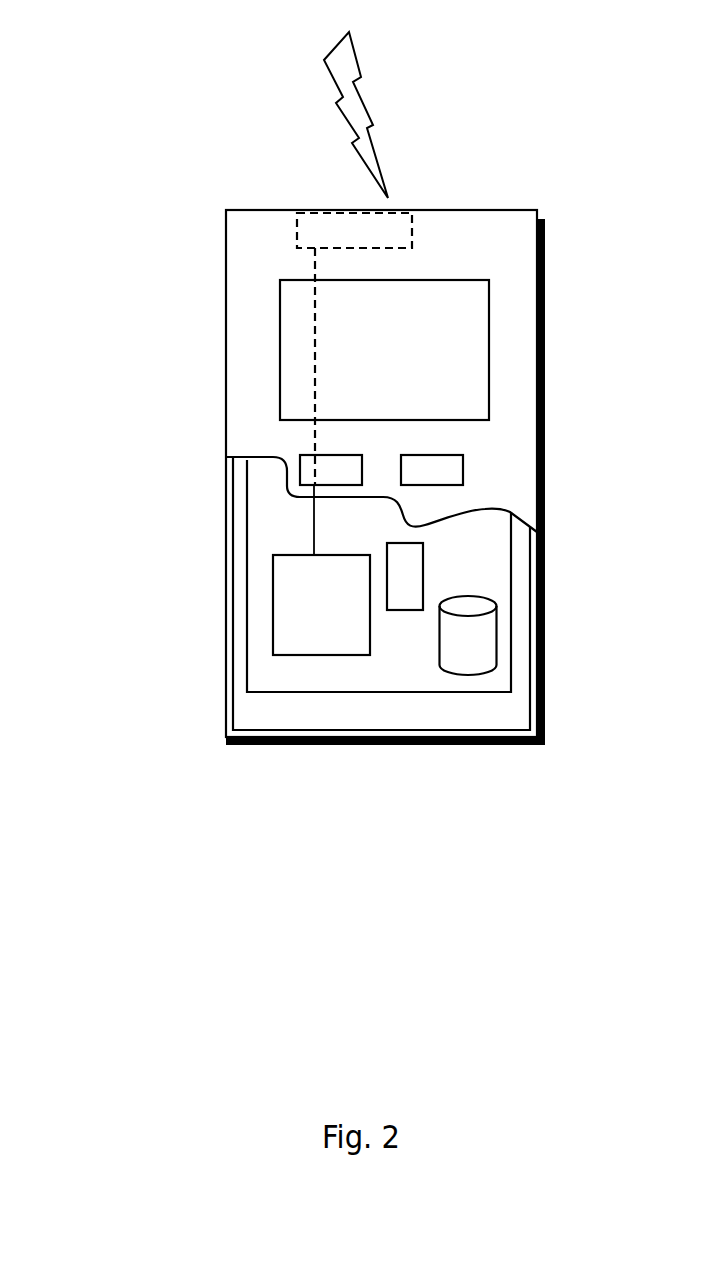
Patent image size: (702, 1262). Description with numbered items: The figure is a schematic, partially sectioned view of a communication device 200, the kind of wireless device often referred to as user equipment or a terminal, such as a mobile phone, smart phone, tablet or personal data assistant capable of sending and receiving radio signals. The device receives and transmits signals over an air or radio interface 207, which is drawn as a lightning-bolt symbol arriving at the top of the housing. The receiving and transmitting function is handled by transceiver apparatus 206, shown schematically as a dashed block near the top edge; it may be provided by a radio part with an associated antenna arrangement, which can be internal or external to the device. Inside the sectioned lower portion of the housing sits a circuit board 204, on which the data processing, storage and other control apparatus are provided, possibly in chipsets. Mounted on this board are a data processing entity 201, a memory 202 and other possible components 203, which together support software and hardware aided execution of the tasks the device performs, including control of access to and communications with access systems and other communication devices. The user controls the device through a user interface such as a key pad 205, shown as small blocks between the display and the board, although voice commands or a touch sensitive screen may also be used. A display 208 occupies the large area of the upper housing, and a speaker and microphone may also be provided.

The communication device 200 is at (226, 253).
The data processing entity 201 is at (280, 587).
The memory 202 is at (462, 648).
The other possible components 203 is at (403, 560).
The circuit board 204 is at (272, 673).
The key pad 205 is at (303, 470).
The transceiver apparatus 206 is at (413, 232).
The air or radio interface 207 is at (386, 142).
The display 208 is at (297, 337).